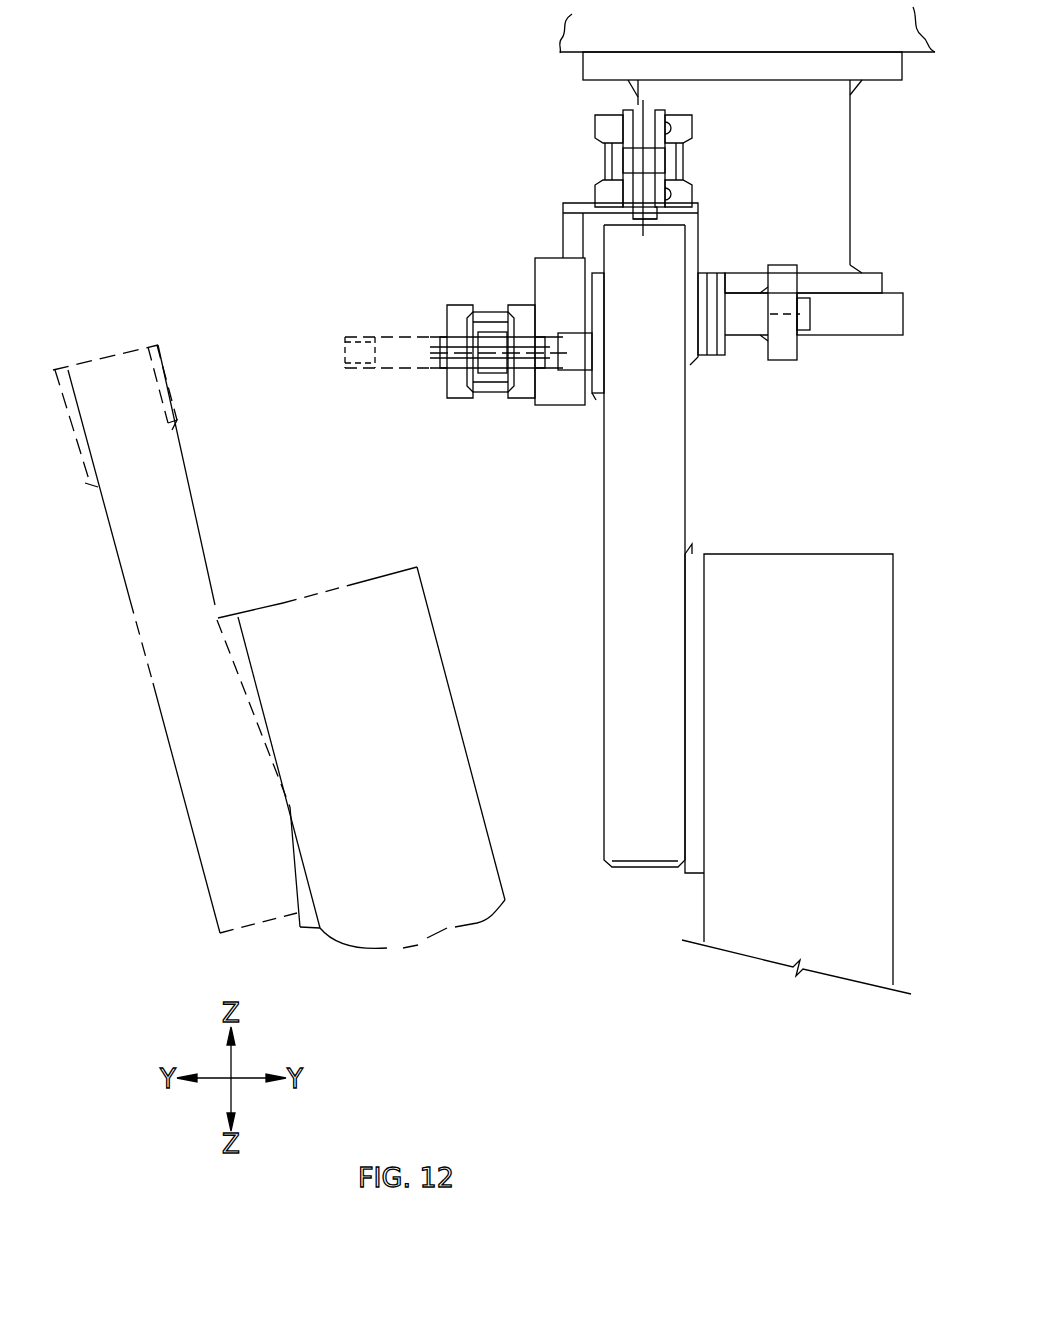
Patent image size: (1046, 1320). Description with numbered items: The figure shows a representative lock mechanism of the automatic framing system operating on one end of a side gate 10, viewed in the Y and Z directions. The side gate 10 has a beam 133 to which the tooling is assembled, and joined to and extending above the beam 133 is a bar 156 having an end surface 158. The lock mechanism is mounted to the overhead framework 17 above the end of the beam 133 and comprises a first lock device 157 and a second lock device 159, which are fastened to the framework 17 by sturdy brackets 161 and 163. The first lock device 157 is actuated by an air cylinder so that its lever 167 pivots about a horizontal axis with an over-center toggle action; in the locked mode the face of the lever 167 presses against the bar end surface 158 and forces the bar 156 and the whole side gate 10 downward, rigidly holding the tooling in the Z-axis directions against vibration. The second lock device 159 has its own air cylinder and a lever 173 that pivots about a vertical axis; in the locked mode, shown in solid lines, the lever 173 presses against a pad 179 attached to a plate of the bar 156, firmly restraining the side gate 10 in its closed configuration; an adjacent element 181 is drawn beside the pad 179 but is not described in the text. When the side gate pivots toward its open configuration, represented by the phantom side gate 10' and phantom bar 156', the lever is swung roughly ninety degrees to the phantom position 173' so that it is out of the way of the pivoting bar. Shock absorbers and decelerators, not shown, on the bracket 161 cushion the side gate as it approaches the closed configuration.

The framework 17 is at (648, 37).
The first lock device 157 is at (682, 127).
The end surface 158 is at (672, 218).
The bracket 161 is at (810, 172).
The lever 167 is at (627, 217).
The lever (phantom position) 173' is at (387, 288).
The lever 173 is at (511, 434).
The second lock device 159 is at (458, 401).
The pad 179 is at (573, 367).
The strip 181 is at (598, 375).
The bar 156 is at (704, 546).
The bracket 163 is at (847, 315).
The side gate 10 is at (557, 500).
The side gate (phantom position) 10' is at (234, 517).
The bar (phantom position) 156' is at (175, 639).
The beam 133 is at (460, 725).